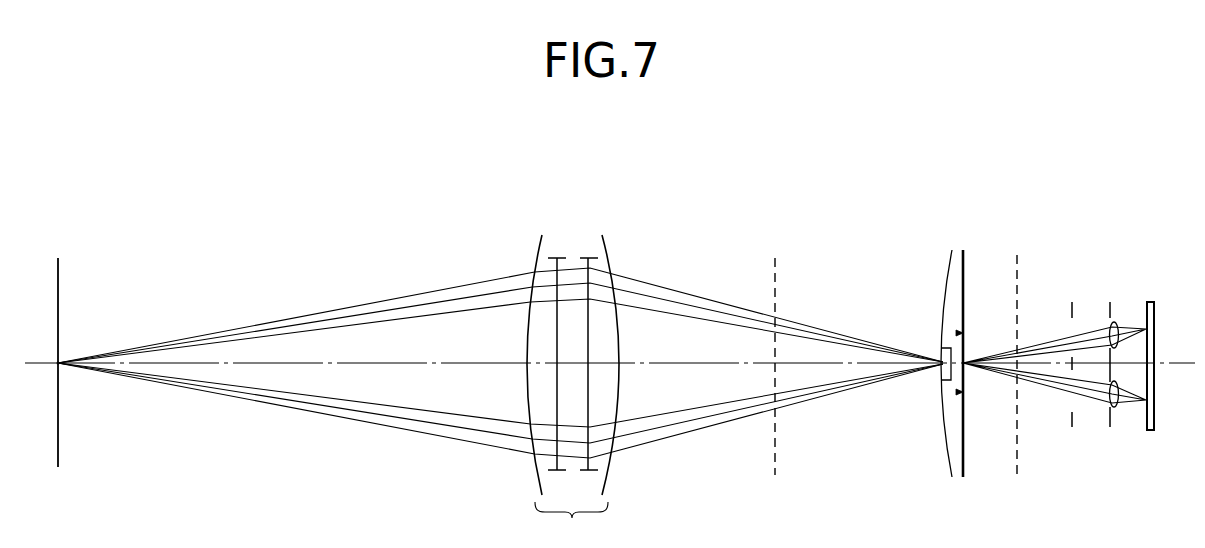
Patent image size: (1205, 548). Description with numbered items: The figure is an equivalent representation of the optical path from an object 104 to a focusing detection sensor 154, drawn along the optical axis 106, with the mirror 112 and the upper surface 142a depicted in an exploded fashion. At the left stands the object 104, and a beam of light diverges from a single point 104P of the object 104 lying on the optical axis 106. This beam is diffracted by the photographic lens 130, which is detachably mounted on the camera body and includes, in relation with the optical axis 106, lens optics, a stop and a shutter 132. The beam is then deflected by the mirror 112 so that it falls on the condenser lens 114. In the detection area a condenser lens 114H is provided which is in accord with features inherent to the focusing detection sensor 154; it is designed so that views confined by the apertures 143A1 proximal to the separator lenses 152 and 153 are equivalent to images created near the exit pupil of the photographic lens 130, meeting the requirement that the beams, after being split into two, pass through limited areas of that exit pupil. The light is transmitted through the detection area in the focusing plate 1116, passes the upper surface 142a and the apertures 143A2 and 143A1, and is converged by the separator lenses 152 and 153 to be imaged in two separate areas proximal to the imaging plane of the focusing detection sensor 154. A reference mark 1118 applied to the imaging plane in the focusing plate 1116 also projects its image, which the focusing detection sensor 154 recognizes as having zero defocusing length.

The object 104 is at (57, 258).
The single point of the object 104P is at (60, 362).
The optical axis 106 is at (368, 345).
The photographic lens 130 is at (573, 391).
The shutter 132 is at (586, 256).
The mirror 112 is at (776, 258).
The condenser lens 114 is at (948, 457).
The condenser lens 114H is at (941, 378).
The focusing plate 1116 is at (967, 262).
The reference mark 1118 is at (956, 333).
The upper surface 142a is at (1018, 273).
The aperture 143A2 is at (1070, 420).
The aperture 143A1 is at (1108, 418).
The separator lens 152 is at (1117, 323).
The separator lens 153 is at (1115, 410).
The focusing detection sensor 154 is at (1152, 433).